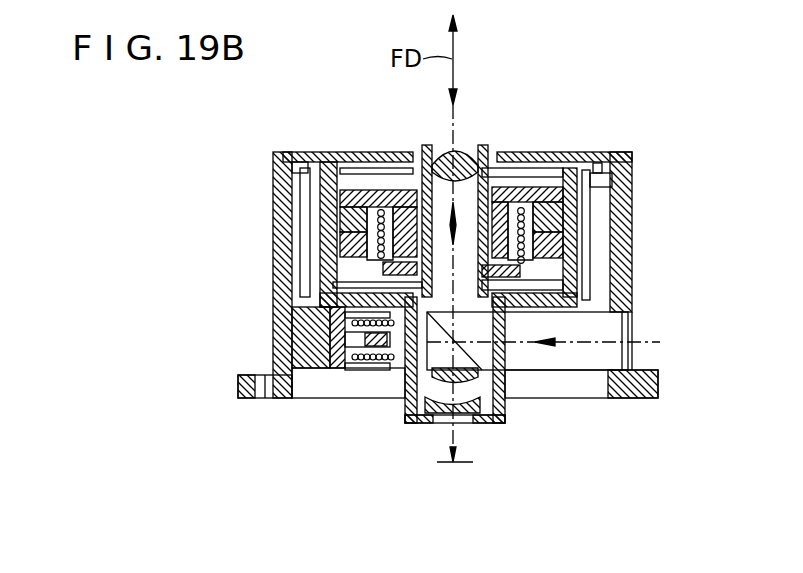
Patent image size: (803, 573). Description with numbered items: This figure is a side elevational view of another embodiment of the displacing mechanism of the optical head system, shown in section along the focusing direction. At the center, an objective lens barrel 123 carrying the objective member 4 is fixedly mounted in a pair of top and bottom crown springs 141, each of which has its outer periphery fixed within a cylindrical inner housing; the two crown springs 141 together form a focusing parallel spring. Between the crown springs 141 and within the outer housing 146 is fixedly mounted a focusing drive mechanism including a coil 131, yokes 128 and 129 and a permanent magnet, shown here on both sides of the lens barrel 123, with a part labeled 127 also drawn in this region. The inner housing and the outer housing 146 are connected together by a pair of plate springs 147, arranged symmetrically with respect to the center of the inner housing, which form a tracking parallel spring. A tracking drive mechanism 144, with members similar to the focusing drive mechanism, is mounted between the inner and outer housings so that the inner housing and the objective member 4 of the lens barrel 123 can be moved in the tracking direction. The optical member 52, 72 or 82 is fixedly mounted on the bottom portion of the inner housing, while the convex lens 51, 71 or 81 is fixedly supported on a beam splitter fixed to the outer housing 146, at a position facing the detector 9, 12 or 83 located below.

The objective member 4 is at (430, 198).
The objective lens barrel 123 is at (423, 143).
The crown springs 141 is at (532, 173).
The outer housing 146 is at (280, 170).
The plate springs 147 is at (305, 215).
The coil 131 is at (377, 258).
The magnet 127 is at (563, 193).
The yoke 128 is at (557, 218).
The yoke 129 is at (557, 247).
The tracking drive mechanism 144 is at (380, 400).
The convex lens 51 is at (531, 399).
The convex lens 71 is at (531, 399).
The convex lens 81 is at (507, 420).
The optical member 52 is at (391, 451).
The optical member 72 is at (391, 451).
The optical member 82 is at (430, 425).
The detector 9 is at (512, 327).
The detector 12 is at (512, 327).
The detector 83 is at (455, 462).